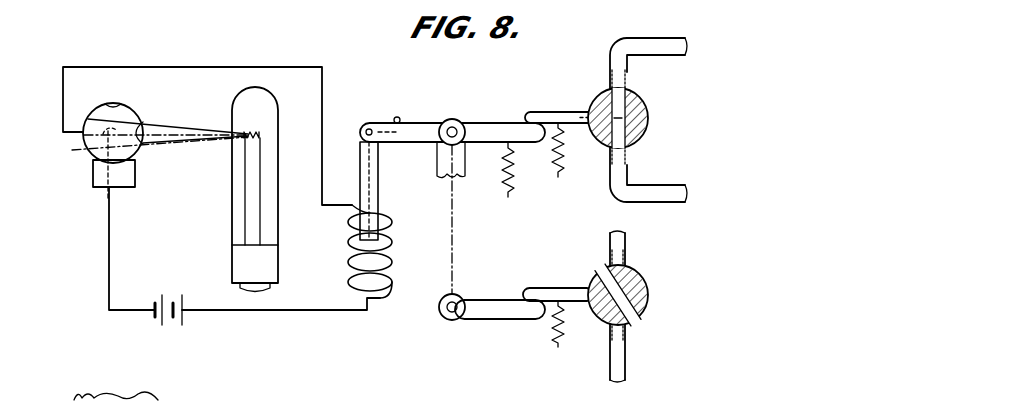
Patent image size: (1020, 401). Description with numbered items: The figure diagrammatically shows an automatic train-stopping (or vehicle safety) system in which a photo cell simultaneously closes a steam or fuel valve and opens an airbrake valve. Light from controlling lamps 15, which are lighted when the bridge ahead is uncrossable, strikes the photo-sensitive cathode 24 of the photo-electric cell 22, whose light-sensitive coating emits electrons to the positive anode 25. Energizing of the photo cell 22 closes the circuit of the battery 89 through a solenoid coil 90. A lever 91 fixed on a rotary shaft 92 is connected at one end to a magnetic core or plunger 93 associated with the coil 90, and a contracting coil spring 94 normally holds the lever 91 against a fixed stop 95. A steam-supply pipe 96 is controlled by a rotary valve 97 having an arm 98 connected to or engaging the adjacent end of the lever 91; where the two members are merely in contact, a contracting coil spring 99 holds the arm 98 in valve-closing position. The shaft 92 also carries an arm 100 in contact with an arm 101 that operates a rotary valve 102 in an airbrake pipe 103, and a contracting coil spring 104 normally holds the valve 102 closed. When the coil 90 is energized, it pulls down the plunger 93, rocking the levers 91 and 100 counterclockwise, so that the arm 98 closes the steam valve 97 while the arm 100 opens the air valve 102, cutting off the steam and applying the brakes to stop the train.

The lamps 15 is at (232, 198).
The photo-electric cell 22 is at (100, 180).
The photo-sensitive cathode 24 is at (119, 107).
The anode 25 is at (80, 149).
The battery 89 is at (163, 296).
The solenoid coil 90 is at (352, 253).
The lever 91 is at (413, 134).
The rotary shaft 92 is at (454, 122).
The magnetic core or plunger 93 is at (361, 166).
The contracting coil spring 94 is at (512, 183).
The fixed stop 95 is at (400, 118).
The steam-supply pipe 96 is at (662, 44).
The rotary valve 97 is at (638, 118).
The arm 98 is at (546, 112).
The contracting coil spring 99 is at (563, 161).
The arm 100 is at (492, 314).
The arm 101 is at (545, 288).
The rotary valve 102 is at (640, 289).
The airbrake pipe 103 is at (626, 358).
The contracting coil spring 104 is at (552, 334).